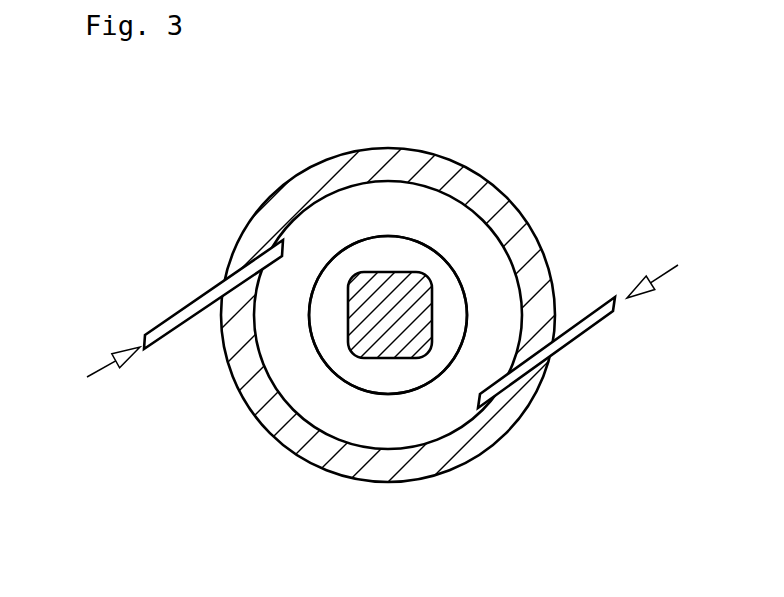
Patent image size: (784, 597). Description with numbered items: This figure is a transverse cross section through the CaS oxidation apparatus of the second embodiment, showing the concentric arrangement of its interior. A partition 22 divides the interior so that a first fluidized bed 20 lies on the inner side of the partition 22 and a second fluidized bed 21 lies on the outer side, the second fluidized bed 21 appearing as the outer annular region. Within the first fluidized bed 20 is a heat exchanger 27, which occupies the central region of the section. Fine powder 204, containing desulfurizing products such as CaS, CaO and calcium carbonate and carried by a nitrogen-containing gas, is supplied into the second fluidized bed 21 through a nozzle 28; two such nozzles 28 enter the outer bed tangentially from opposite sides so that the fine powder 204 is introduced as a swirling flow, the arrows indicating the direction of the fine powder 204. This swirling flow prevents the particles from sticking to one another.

The first fluidized bed 20 is at (398, 255).
The second fluidized bed 21 is at (357, 427).
The partition 22 is at (323, 271).
The heat exchanger 27 is at (411, 338).
The nozzle 28 is at (172, 332).
The fine powder 204 is at (360, 321).